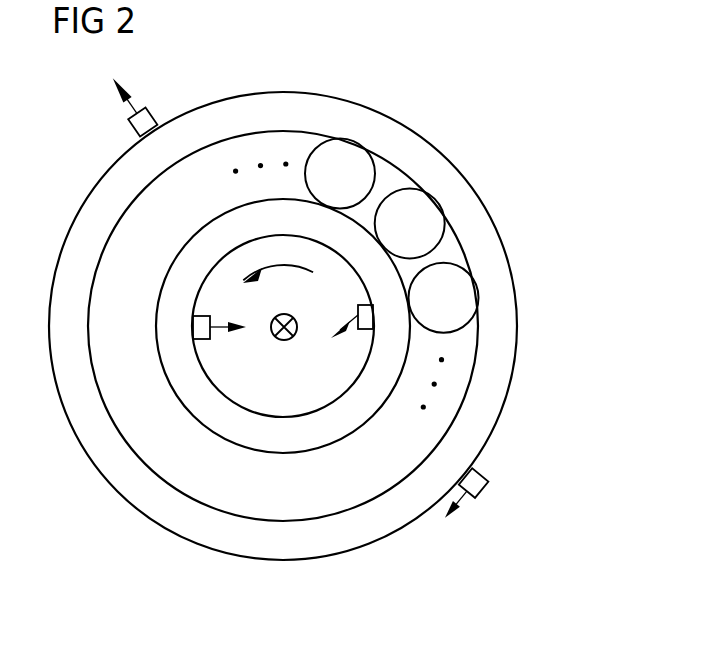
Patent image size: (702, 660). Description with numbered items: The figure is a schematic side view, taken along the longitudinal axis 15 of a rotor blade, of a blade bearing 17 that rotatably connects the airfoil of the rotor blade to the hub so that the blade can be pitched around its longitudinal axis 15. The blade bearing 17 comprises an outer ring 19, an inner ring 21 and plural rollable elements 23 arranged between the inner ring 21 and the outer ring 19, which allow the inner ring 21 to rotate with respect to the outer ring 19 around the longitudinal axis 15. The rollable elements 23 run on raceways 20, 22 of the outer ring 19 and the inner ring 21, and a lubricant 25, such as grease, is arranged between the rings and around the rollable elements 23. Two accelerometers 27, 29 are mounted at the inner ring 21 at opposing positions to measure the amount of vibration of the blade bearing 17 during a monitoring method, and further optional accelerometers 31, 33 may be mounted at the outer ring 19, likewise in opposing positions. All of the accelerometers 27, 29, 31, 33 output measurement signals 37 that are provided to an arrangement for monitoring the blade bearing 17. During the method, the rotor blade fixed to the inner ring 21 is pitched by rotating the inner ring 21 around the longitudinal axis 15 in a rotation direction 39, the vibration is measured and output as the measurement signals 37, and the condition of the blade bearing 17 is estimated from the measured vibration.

The longitudinal axis 15 is at (284, 342).
The blade bearing 17 is at (483, 121).
The outer ring 19 is at (507, 362).
The raceway 20 is at (162, 180).
The inner ring 21 is at (284, 453).
The raceway 22 is at (178, 253).
The rollable elements 23 is at (412, 200).
The lubricant 25 is at (450, 250).
The accelerometer 27 is at (193, 328).
The accelerometer 29 is at (358, 306).
The accelerometer 31 is at (150, 118).
The accelerometer 33 is at (478, 488).
The measurement signals 37 is at (103, 72).
The rotation direction 39 is at (281, 265).